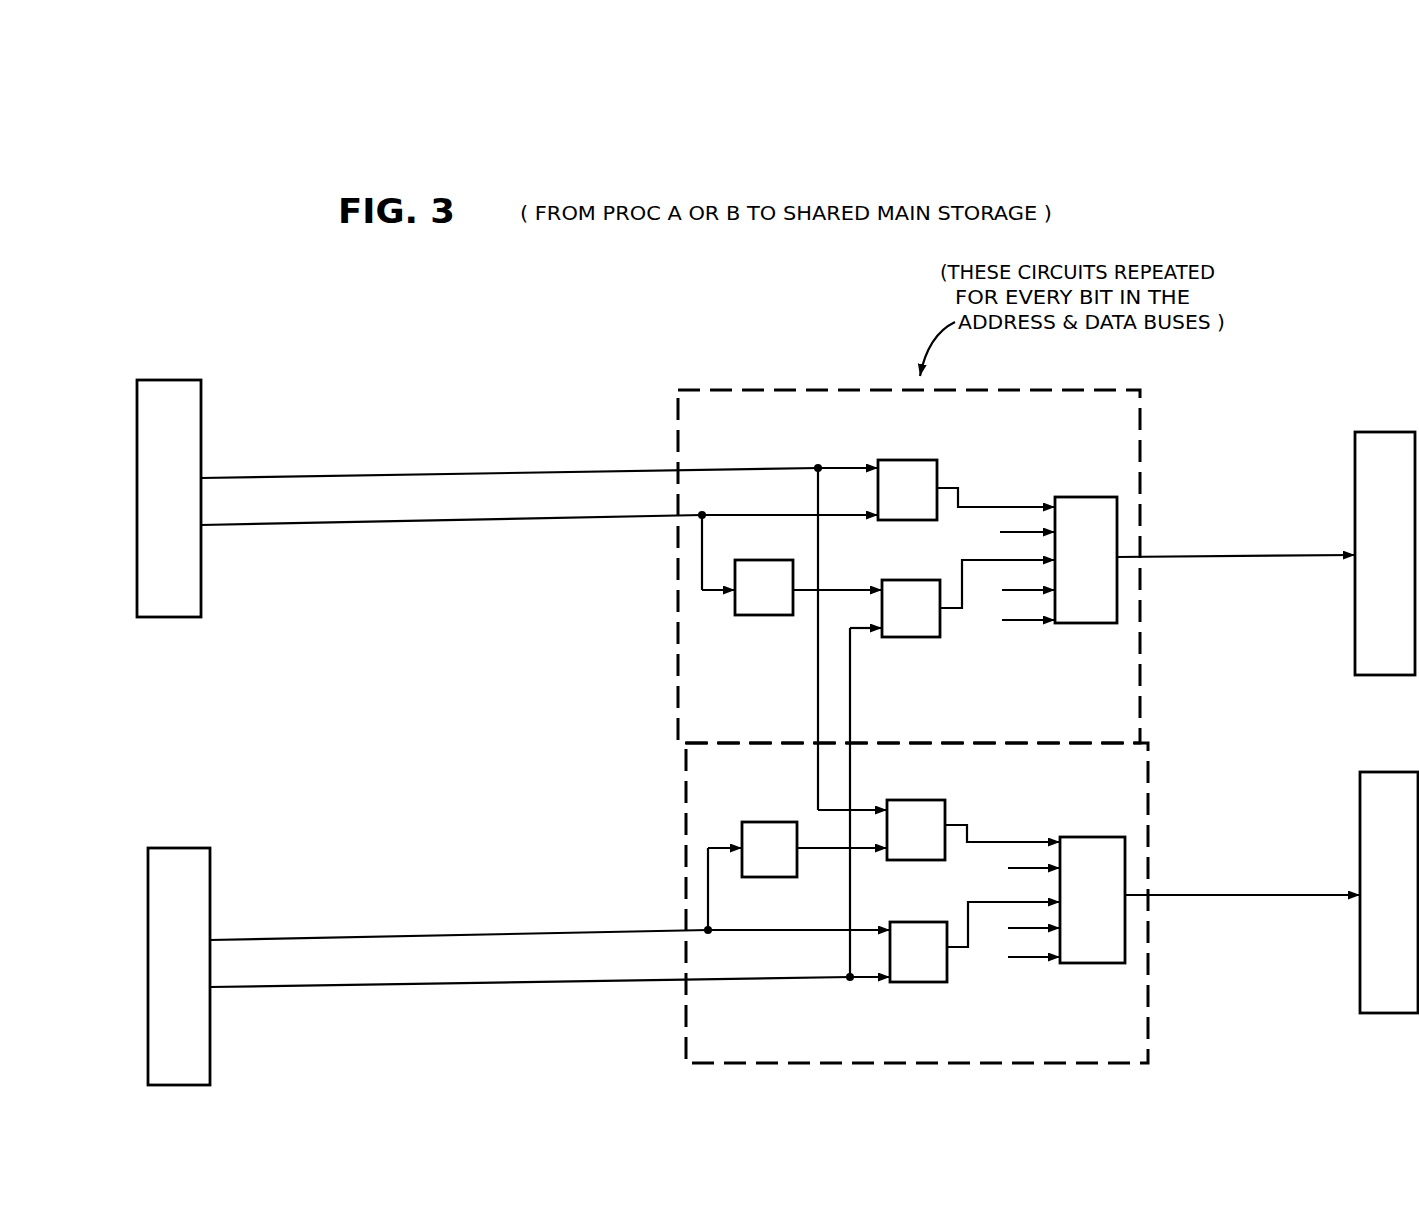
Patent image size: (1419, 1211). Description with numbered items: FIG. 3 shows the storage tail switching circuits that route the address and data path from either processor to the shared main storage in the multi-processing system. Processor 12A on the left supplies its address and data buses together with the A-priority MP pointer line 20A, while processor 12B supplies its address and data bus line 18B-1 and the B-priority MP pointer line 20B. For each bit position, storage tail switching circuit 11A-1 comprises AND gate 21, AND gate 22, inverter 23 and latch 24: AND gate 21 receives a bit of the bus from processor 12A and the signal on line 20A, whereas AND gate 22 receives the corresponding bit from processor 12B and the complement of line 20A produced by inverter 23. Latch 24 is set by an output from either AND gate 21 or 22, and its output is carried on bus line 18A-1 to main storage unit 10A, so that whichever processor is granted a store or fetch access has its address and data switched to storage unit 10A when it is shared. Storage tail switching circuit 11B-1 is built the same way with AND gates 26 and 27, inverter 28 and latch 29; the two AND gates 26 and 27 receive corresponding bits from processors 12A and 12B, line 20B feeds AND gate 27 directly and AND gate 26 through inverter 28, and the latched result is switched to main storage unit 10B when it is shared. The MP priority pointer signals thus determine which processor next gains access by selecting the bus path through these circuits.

The main storage unit 10A is at (1376, 432).
The main storage unit 10B is at (1383, 772).
The processor 12A is at (159, 380).
The processor 12B is at (184, 848).
The bus line 18A-1 is at (630, 468).
The bus line 18B-1 is at (648, 980).
The A-priority MP pointer line 20A is at (534, 516).
The B-priority MP pointer line 20B is at (530, 930).
The storage tail switching circuit 11A-1 is at (955, 727).
The storage tail switching circuit 11B-1 is at (937, 1043).
The AND gate 21 is at (915, 460).
The AND gate 22 is at (900, 580).
The inverter 23 is at (781, 613).
The latch 24 is at (1075, 497).
The AND gate 26 is at (910, 800).
The AND gate 27 is at (925, 922).
The inverter 28 is at (757, 822).
The latch 29 is at (1088, 837).